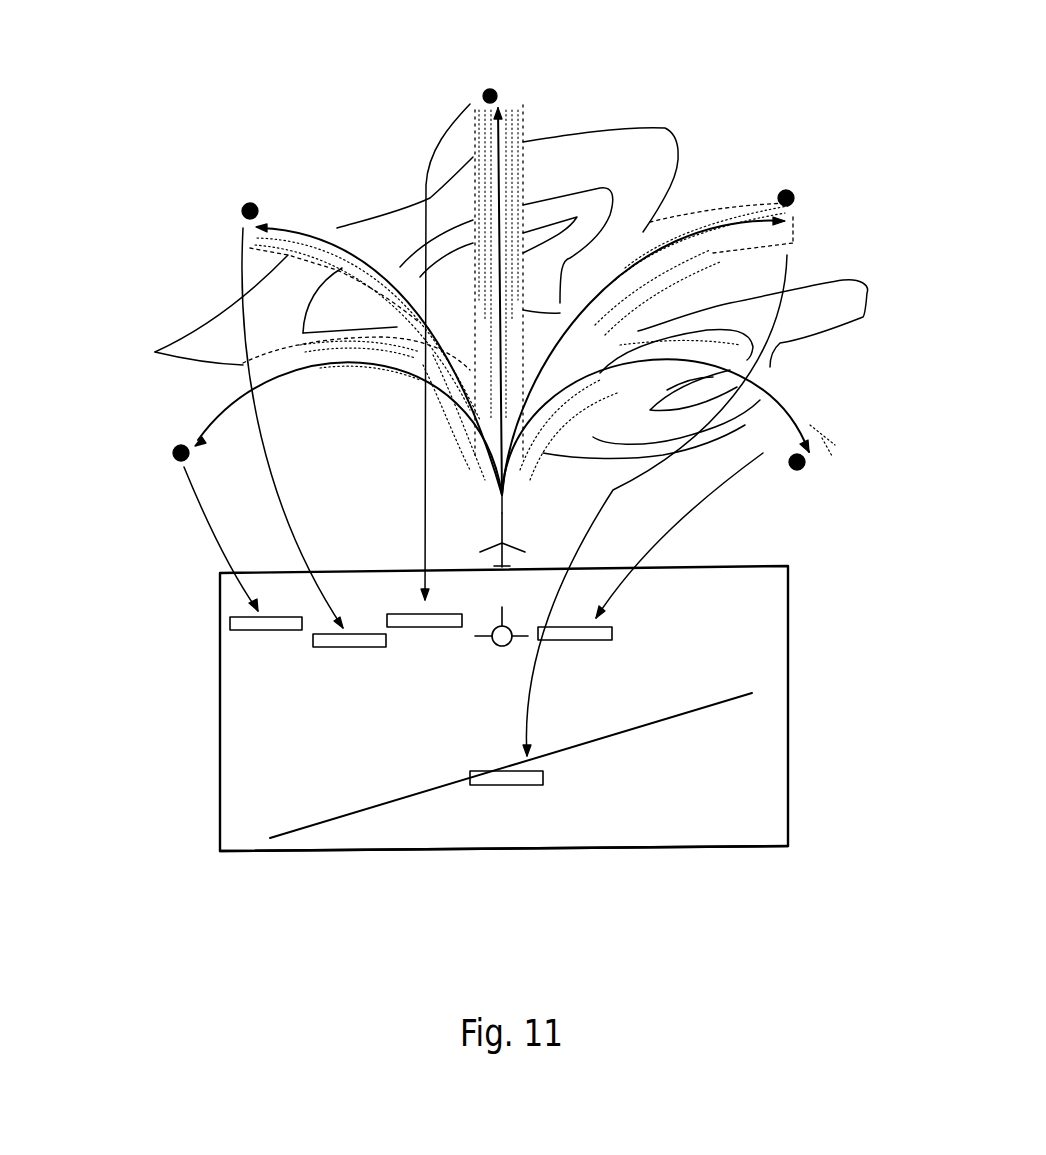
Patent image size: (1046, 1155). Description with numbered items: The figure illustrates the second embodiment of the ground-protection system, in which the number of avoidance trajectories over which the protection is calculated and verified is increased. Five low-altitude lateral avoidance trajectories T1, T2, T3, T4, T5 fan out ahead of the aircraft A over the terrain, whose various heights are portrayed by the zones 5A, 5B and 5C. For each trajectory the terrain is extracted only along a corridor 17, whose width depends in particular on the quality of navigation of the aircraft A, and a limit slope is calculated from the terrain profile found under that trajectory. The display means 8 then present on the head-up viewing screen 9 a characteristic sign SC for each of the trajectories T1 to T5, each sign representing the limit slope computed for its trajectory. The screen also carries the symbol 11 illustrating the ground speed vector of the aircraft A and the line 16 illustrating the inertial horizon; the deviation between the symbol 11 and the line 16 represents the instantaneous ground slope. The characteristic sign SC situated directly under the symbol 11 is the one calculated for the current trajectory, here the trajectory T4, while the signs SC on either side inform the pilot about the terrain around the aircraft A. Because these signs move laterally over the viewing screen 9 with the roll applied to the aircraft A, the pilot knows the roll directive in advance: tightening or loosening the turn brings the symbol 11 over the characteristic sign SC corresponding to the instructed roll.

The display means 8 is at (283, 872).
The viewing screen 9 is at (667, 851).
The line 16 is at (672, 717).
The characteristic sign SC is at (265, 632).
The symbol 11 is at (494, 647).
The aircraft A is at (513, 528).
The trajectory T1 is at (193, 413).
The trajectory T2 is at (295, 225).
The trajectory T3 is at (512, 116).
The trajectory T4 is at (745, 219).
The trajectory T5 is at (800, 414).
The corridor 17 is at (320, 230).
The zone 5A is at (667, 128).
The zone 5B is at (585, 190).
The zone 5C is at (645, 232).